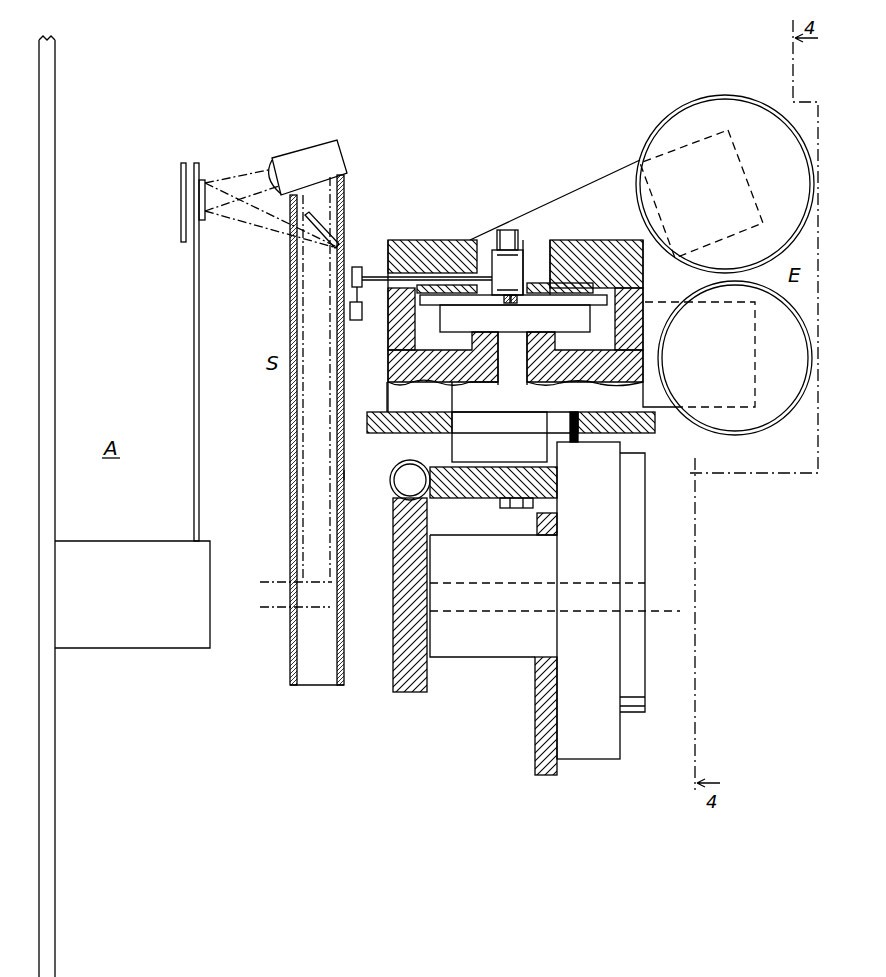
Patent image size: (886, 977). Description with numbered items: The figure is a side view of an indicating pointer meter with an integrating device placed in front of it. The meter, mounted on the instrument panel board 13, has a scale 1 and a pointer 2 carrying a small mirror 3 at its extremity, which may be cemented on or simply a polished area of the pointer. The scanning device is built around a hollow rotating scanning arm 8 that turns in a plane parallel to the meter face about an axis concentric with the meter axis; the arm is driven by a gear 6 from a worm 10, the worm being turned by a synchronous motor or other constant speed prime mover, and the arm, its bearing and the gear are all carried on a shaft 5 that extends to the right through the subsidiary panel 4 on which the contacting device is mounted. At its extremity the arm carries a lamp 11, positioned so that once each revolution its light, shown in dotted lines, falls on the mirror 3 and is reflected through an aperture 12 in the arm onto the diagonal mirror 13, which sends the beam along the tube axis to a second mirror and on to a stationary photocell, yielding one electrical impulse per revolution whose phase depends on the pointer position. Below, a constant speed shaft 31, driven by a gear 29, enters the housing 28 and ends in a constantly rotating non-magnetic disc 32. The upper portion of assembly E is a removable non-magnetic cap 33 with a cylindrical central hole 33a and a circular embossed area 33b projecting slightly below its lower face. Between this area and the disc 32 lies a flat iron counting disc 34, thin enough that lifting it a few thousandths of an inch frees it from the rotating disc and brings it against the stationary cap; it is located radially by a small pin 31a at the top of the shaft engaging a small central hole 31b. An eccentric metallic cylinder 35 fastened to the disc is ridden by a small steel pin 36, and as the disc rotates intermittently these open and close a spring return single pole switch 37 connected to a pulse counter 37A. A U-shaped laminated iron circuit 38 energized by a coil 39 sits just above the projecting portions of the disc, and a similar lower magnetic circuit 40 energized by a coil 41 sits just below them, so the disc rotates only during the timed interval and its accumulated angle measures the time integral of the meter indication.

The scale 1 is at (181, 215).
The pointer 2 is at (194, 419).
The small mirror 3 is at (205, 182).
The subsidiary panel 4 is at (590, 608).
The shaft 5 is at (663, 612).
The gear 6 is at (414, 694).
The scanning arm 8 is at (344, 457).
The worm 10 is at (406, 460).
The lamp 11 is at (322, 169).
The aperture 12 is at (290, 242).
The diagonal mirror 13 is at (50, 422).
The housing 28 is at (385, 358).
The gear 29 is at (472, 500).
The constant speed shaft 31 is at (521, 369).
The small pin 31a is at (516, 300).
The small central hole 31b is at (505, 300).
The non-magnetic disc 32 is at (515, 318).
The removable non-magnetic cap 33 is at (415, 240).
The cylindrical central hole 33a is at (537, 252).
The circular embossed area 33b is at (575, 283).
The flat iron disc 34 is at (600, 305).
The metallic cylinder 35 is at (520, 245).
The small steel pin 36 is at (390, 255).
The single pole switch 37 is at (357, 267).
The electrical pulse counter 37A is at (357, 320).
The U-shaped laminated iron circuit 38 is at (638, 157).
The coil 39 is at (725, 184).
The lower magnetic circuit 40 is at (678, 441).
The coil 41 is at (728, 358).